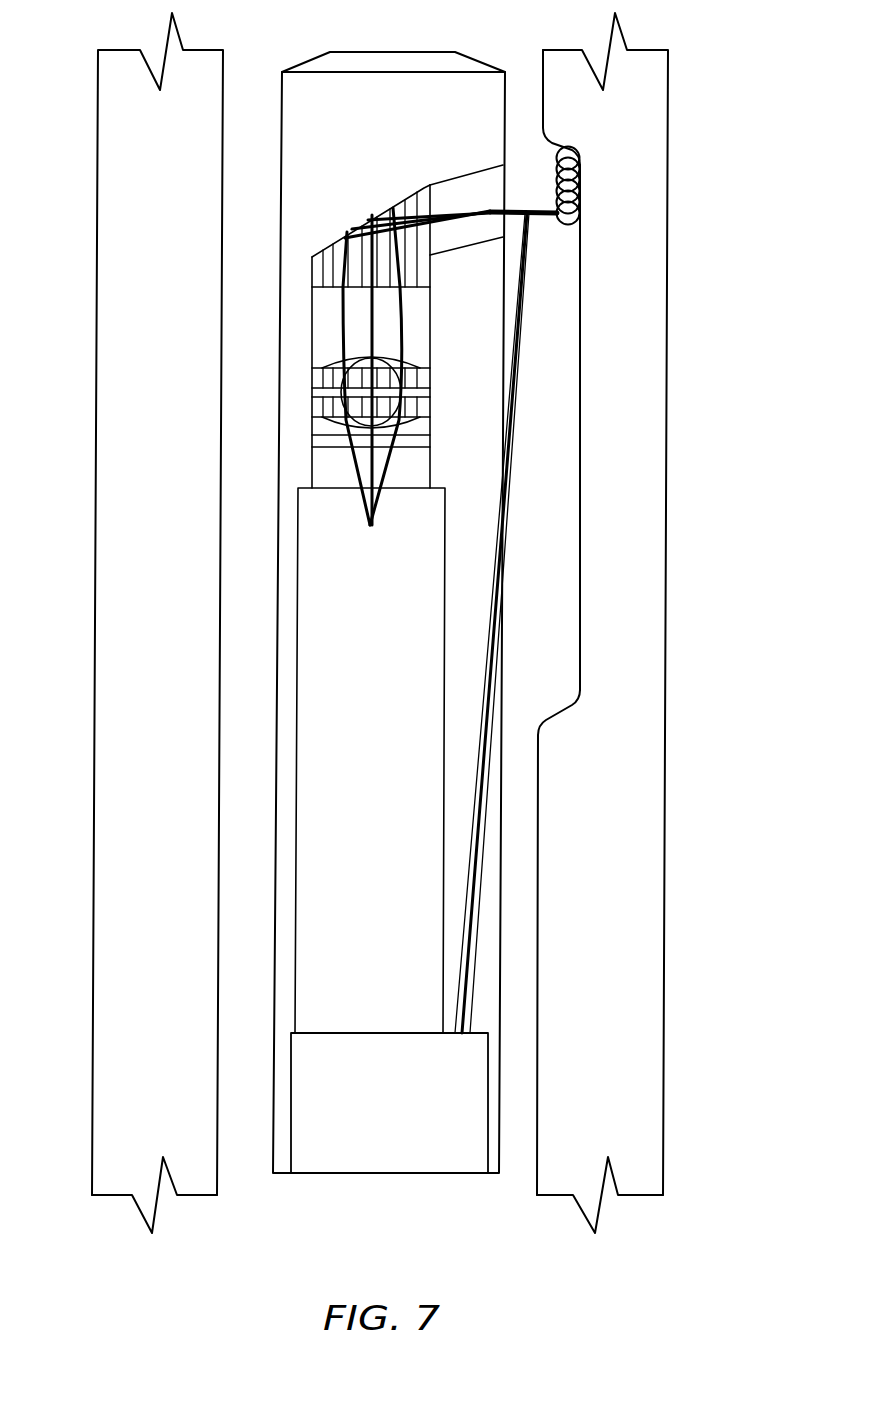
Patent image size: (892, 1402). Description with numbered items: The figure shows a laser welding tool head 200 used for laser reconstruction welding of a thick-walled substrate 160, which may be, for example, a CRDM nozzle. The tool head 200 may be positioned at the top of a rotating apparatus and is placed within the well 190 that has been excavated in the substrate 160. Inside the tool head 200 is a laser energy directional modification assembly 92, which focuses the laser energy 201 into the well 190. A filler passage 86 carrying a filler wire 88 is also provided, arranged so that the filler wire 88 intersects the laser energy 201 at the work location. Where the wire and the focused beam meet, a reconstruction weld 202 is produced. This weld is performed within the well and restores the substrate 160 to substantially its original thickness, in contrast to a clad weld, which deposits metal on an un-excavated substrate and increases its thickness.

The thick-walled substrate 160 is at (421, 623).
The well 190 is at (606, 427).
The laser welding tool head 200 is at (389, 592).
The laser energy 201 is at (471, 183).
The reconstruction weld 202 is at (604, 168).
The laser energy directional modification assembly 92 is at (294, 336).
The filler wire 88 is at (456, 620).
The filler passage 86 is at (529, 623).